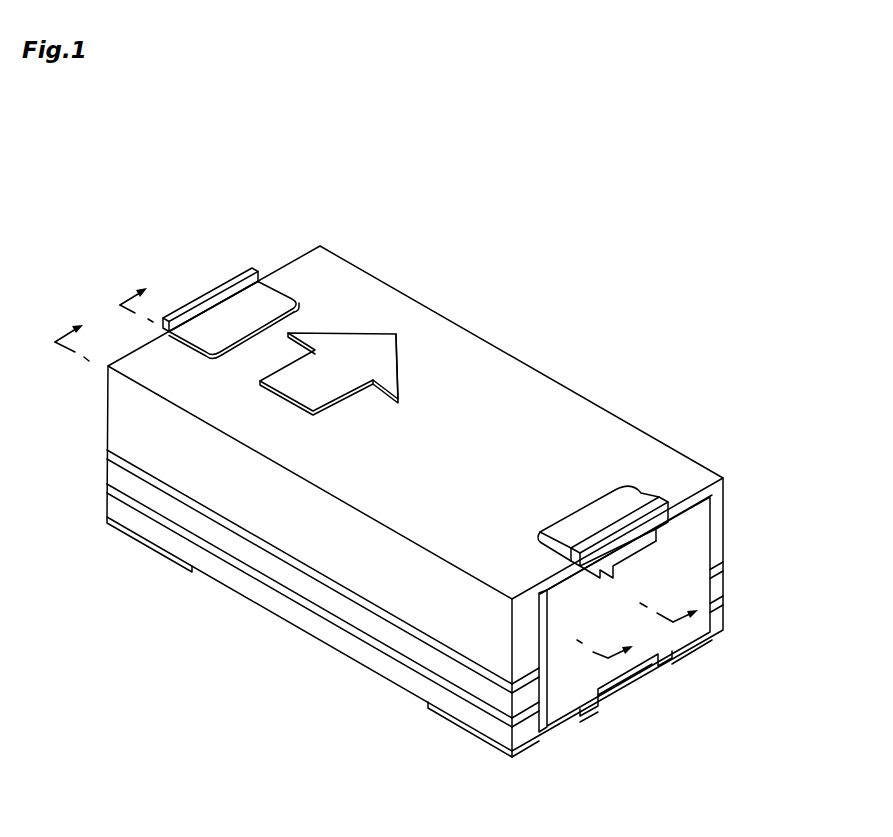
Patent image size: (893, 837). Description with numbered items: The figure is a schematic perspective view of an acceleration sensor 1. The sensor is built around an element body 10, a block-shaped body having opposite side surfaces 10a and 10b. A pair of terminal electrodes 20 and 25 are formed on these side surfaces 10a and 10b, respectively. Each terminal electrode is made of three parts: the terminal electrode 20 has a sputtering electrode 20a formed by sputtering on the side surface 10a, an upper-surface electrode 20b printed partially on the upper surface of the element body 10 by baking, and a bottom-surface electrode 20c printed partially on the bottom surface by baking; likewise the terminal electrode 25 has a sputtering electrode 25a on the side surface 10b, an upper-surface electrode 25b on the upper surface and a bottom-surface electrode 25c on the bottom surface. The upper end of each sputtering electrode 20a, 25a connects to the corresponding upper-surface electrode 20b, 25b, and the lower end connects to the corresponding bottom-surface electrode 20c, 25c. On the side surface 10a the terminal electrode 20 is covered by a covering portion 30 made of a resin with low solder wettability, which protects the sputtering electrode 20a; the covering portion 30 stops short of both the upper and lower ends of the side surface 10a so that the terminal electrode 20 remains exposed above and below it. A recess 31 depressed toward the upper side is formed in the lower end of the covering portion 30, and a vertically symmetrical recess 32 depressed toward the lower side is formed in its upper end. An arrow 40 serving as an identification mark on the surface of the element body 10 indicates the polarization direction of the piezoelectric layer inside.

The acceleration sensor 1 is at (195, 146).
The element body 10 is at (343, 254).
The side surface 10a is at (523, 698).
The side surface 10b is at (136, 481).
The terminal electrode 20 is at (628, 471).
The sputtering electrode 20a is at (623, 530).
The upper-surface electrode 20b is at (627, 498).
The bottom-surface electrode 20c is at (470, 737).
The terminal electrode 25 is at (231, 277).
The sputtering electrode 25a is at (202, 305).
The upper-surface electrode 25b is at (278, 300).
The bottom-surface electrode 25c is at (152, 550).
The covering portion 30 is at (663, 607).
The recess 31 is at (627, 675).
The recess 32 is at (615, 562).
The arrow 40 is at (382, 343).